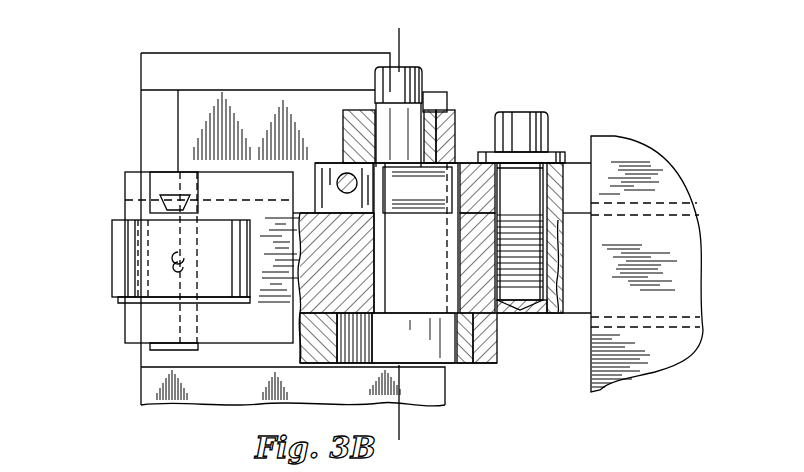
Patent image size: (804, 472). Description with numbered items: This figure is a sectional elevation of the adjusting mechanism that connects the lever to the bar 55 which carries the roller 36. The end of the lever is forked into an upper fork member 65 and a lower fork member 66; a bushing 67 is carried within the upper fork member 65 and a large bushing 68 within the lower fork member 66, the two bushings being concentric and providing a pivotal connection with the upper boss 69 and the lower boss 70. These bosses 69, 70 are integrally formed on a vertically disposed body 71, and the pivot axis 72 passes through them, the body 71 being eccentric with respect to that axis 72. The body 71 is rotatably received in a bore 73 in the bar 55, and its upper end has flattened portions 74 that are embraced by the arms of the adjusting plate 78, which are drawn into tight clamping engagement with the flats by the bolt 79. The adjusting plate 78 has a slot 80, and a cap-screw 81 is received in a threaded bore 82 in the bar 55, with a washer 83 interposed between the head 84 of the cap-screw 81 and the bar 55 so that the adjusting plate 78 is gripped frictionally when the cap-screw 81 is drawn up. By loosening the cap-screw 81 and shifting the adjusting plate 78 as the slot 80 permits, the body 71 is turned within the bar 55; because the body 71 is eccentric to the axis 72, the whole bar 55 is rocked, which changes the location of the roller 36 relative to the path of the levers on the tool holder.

The roller 36 is at (126, 258).
The bar 55 is at (352, 281).
The upper fork member 65 is at (450, 122).
The lower fork member 66 is at (488, 365).
The bushing 67 is at (430, 108).
The large bushing 68 is at (468, 365).
The upper boss 69 is at (412, 144).
The lower boss 70 is at (401, 349).
The body 71 is at (426, 271).
The pivot axis 72 is at (404, 36).
The bore 73 is at (464, 248).
The flattened portions 74 is at (428, 199).
The adjusting plate 78 is at (470, 163).
The bolt 79 is at (345, 165).
The slot 80 is at (545, 190).
The cap-screw 81 is at (528, 207).
The threaded bore 82 is at (530, 314).
The washer 83 is at (562, 152).
The head 84 is at (522, 125).